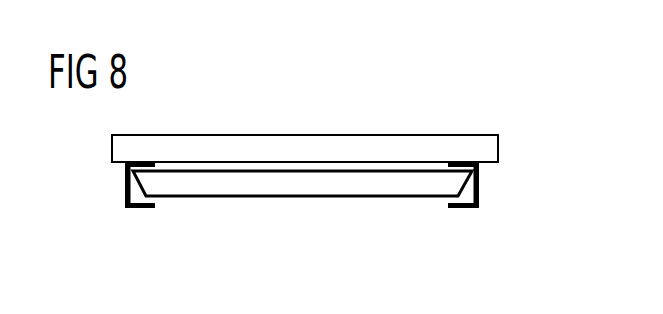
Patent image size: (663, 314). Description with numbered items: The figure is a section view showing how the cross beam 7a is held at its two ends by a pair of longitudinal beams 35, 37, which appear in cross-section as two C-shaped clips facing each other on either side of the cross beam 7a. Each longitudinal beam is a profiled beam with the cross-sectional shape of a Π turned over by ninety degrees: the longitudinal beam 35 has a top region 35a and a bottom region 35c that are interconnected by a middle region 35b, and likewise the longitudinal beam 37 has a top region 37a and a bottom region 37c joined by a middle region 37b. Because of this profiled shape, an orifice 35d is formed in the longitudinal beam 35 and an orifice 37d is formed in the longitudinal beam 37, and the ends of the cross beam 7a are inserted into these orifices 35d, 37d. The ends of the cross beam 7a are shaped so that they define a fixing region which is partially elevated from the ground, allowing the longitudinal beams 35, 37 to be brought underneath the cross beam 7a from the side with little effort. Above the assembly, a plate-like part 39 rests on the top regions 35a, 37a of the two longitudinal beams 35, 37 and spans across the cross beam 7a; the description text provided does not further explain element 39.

The cover plate 39 is at (302, 142).
The cross beam 7a is at (298, 192).
The longitudinal beam 35 is at (114, 190).
The top region 35a is at (147, 162).
The middle region 35b is at (126, 185).
The bottom region 35c is at (150, 210).
The orifice 35d is at (135, 195).
The longitudinal beam 37 is at (491, 190).
The top region 37a is at (455, 162).
The middle region 37b is at (480, 185).
The bottom region 37c is at (460, 207).
The orifice 37d is at (475, 195).